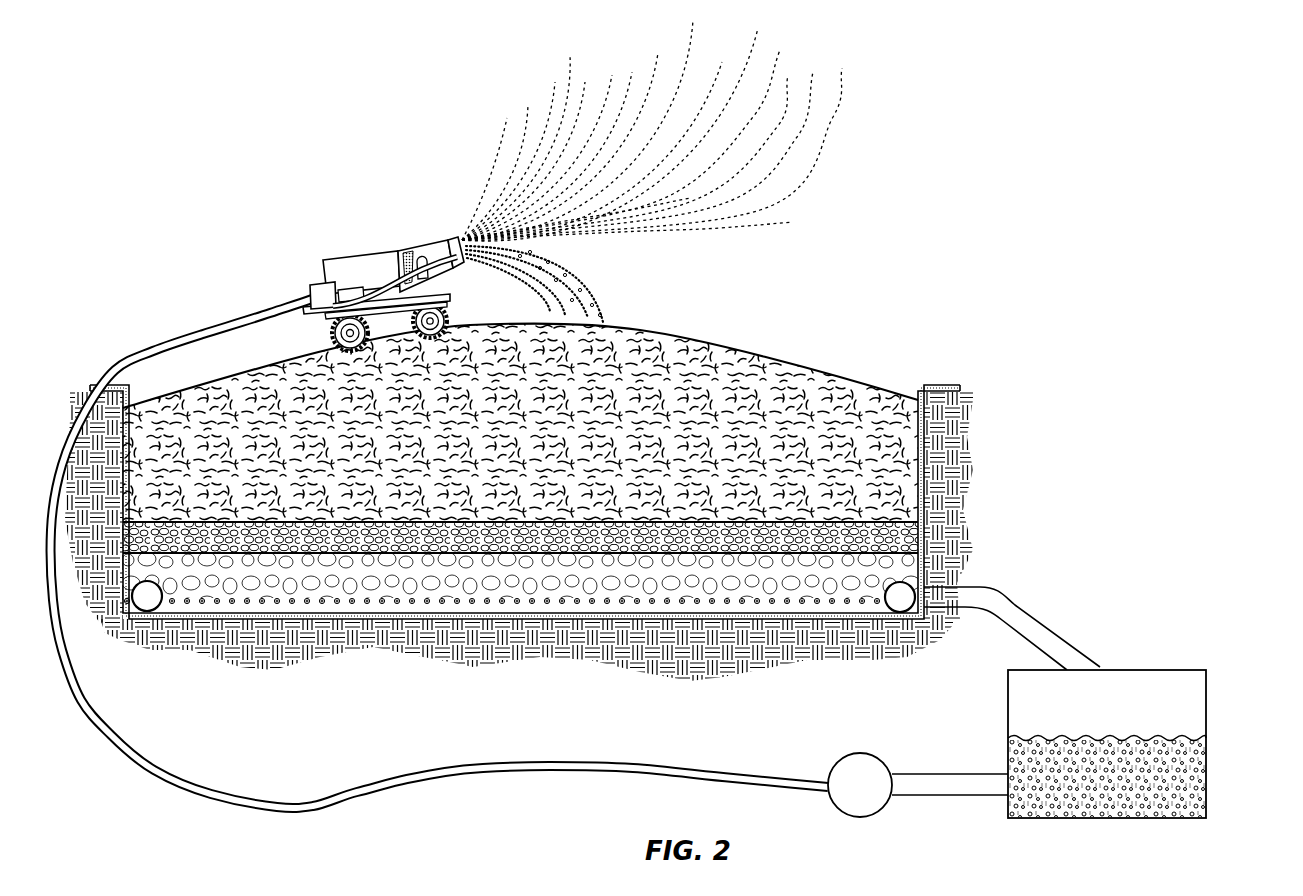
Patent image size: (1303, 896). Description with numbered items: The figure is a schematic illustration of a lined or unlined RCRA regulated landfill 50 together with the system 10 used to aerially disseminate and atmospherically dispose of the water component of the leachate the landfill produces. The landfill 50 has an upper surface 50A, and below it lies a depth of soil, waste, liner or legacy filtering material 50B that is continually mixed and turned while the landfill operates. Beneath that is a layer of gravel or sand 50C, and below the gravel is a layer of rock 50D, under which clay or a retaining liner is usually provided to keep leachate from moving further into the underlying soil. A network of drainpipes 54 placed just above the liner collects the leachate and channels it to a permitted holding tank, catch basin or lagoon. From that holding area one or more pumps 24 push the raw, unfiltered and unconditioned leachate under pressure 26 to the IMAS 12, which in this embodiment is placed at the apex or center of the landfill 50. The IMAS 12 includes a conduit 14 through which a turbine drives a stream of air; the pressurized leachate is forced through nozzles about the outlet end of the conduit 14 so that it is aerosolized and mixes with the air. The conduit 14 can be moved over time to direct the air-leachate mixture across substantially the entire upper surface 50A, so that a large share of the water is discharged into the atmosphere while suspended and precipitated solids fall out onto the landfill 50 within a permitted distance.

The system 10 is at (544, 185).
The IMAS 12 is at (431, 229).
The conduit 14 is at (415, 248).
The pumps 24 is at (878, 812).
The holding area 26 is at (1208, 697).
The landfill 50 is at (582, 471).
The upper surface 50A is at (758, 350).
The soil and waste layer 50B is at (812, 413).
The layer of gravel or sand 50C is at (883, 537).
The layer of rock 50D is at (892, 572).
The drainpipes 54 is at (912, 598).